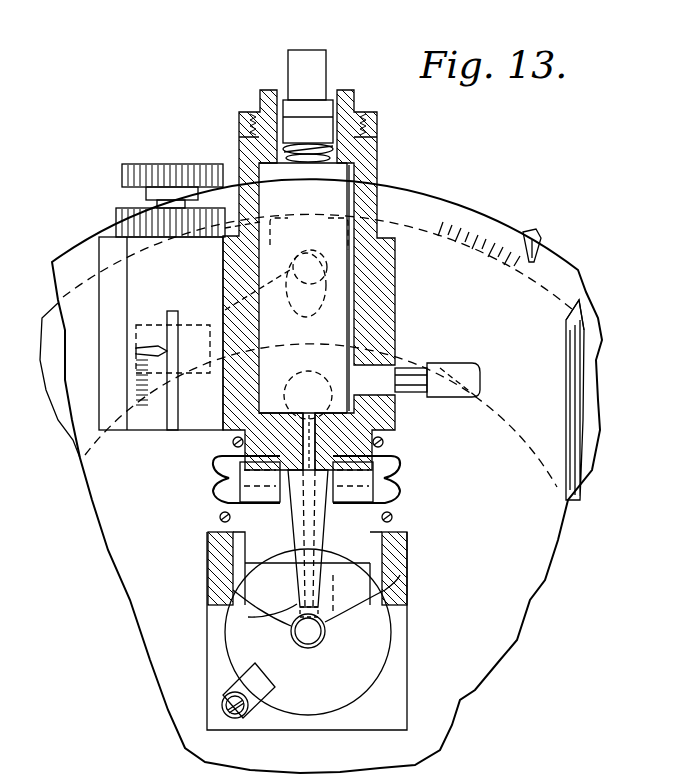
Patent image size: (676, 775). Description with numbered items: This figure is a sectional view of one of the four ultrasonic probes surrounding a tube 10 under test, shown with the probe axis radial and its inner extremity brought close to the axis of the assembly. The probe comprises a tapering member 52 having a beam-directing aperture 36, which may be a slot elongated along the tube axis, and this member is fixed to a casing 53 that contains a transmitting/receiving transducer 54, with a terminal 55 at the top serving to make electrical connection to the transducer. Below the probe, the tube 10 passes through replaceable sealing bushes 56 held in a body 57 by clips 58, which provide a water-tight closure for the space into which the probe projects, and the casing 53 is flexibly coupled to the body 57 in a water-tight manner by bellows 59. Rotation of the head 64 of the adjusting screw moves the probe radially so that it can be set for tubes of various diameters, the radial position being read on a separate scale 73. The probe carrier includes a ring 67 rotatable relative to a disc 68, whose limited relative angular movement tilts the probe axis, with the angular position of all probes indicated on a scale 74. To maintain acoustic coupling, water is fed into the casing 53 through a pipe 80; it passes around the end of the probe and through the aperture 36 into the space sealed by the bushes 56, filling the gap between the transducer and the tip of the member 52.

The tube 10 is at (327, 633).
The beam-directing aperture 36 is at (309, 413).
The tapering member 52 is at (318, 540).
The casing 53 is at (380, 298).
The transmitting/receiving transducer 54 is at (332, 178).
The terminal 55 is at (307, 50).
The sealing bushes 56 is at (270, 596).
The body 57 is at (390, 675).
The clips 58 is at (252, 712).
The bellows 59 is at (214, 483).
The head of the adjusting screw 64 is at (190, 162).
The ring 67 is at (572, 338).
The disc 68 is at (520, 562).
The scale 73 is at (135, 352).
The scale 74 is at (470, 230).
The pipe 80 is at (457, 375).